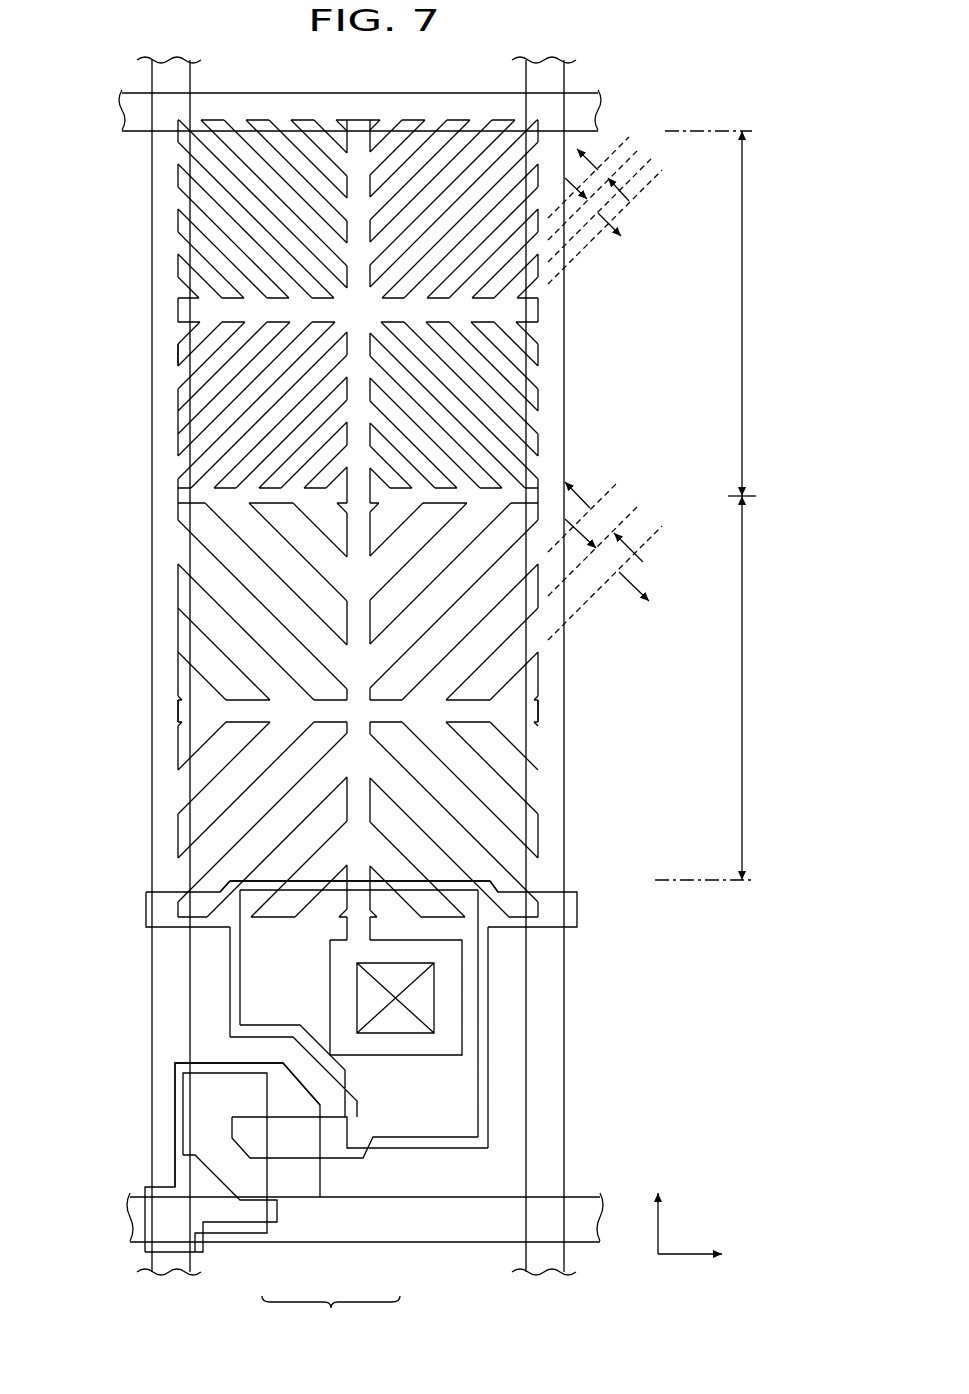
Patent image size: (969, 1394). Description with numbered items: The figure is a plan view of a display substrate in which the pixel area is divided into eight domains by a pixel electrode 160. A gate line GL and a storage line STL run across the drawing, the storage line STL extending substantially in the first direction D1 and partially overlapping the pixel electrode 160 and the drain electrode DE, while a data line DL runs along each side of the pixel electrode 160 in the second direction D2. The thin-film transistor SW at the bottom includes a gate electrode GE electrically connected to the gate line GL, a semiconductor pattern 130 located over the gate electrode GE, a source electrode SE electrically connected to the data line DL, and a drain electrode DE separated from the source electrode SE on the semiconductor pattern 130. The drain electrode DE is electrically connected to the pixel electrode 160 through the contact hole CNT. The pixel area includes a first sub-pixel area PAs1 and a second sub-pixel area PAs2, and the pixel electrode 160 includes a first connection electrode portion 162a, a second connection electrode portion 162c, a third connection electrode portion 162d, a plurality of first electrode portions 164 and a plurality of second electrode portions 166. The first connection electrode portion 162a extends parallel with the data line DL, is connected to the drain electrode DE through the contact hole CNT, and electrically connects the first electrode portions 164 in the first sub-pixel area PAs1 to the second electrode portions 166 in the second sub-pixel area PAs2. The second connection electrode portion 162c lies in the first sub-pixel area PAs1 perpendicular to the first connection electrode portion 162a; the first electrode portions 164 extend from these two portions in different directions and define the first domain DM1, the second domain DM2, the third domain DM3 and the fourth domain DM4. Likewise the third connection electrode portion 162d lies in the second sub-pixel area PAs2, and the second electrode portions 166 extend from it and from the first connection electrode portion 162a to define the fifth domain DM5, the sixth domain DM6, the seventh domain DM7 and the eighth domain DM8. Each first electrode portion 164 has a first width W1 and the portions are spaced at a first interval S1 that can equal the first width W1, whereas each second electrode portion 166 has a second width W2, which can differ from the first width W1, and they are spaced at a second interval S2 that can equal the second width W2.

The data line DL is at (168, 1141).
The gate line GL is at (455, 1215).
The storage line STL is at (572, 916).
The pixel electrode 160 is at (62, 383).
The first connection electrode portion 162a is at (358, 496).
The second connection electrode portion 162c is at (318, 708).
The third connection electrode portion 162d is at (202, 420).
The first electrode portions 164 is at (204, 616).
The second electrode portions 166 is at (205, 366).
The first domain DM1 is at (240, 816).
The second domain DM2 is at (446, 782).
The third domain DM3 is at (226, 680).
The fourth domain DM4 is at (406, 677).
The fifth domain DM5 is at (222, 341).
The sixth domain DM6 is at (468, 400).
The seventh domain DM7 is at (226, 210).
The eighth domain DM8 is at (446, 287).
The contact hole CNT is at (421, 994).
The drain electrode DE is at (352, 1162).
The source electrode SE is at (268, 1168).
The gate electrode GE is at (316, 1176).
The semiconductor pattern 130 is at (272, 1166).
The thin-film transistor SW is at (331, 1312).
The first interval S1 is at (615, 545).
The second interval S2 is at (601, 188).
The first width W1 is at (611, 583).
The second width W2 is at (605, 221).
The first sub-pixel area PAs1 is at (703, 688).
The second sub-pixel area PAs2 is at (710, 313).
The first direction D1 is at (707, 1255).
The second direction D2 is at (658, 1208).